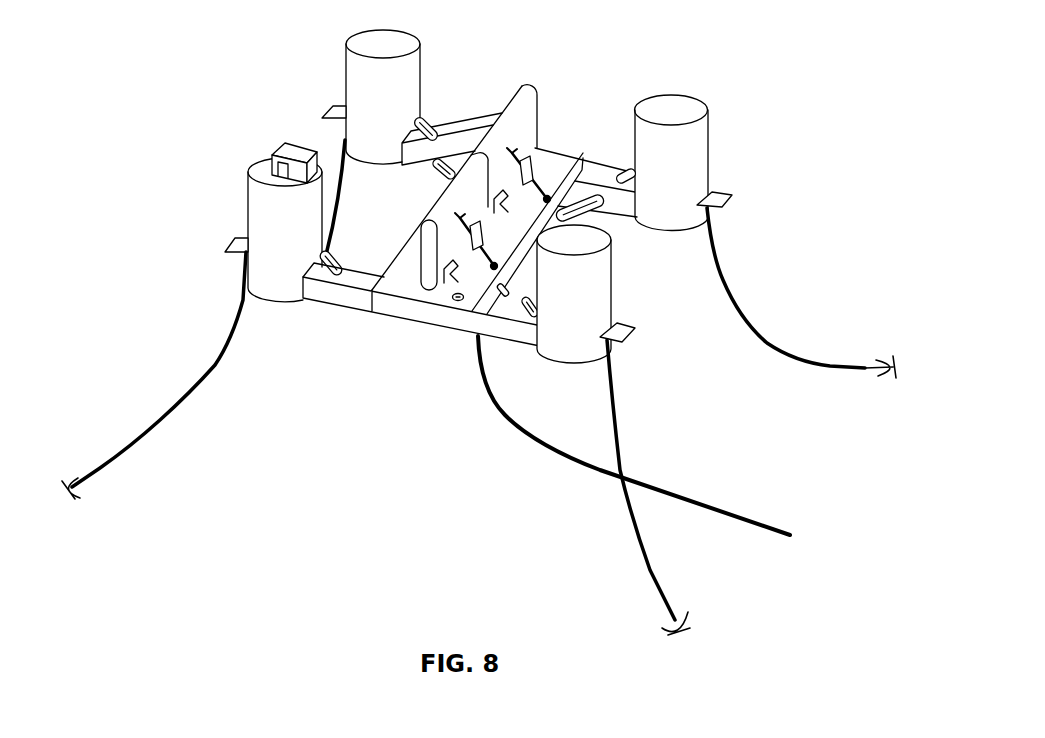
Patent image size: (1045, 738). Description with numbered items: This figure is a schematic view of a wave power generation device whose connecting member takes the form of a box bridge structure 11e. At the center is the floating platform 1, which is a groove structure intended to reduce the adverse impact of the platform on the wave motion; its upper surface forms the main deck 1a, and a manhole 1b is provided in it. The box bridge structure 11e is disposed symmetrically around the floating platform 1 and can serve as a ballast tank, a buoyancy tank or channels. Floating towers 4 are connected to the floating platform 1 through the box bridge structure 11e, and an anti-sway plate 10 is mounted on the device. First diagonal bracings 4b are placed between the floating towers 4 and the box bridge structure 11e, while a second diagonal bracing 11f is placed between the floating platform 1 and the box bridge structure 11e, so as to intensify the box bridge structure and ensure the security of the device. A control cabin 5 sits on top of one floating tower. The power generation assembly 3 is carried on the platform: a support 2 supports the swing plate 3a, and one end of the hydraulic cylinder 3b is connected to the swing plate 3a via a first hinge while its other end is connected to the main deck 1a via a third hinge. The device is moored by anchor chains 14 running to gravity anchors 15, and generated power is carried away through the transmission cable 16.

The floating platform 1 is at (404, 337).
The main deck 1a is at (420, 293).
The manhole 1b is at (457, 302).
The support for supporting swing plate 2 is at (450, 267).
The power generation assembly 3 is at (541, 73).
The swing plate 3a is at (523, 122).
The hydraulic cylinder 3b is at (585, 147).
The floating tower 4 is at (434, 33).
The first diagonal bracing 4b is at (432, 130).
The control cabin 5 is at (265, 135).
The anti-sway plate 10 is at (727, 196).
The box bridge structure 11e is at (508, 332).
The second diagonal bracing 11f is at (443, 172).
The anchor chain 14 is at (743, 300).
The gravity anchor 15 is at (683, 617).
The transmission cable 16 is at (678, 490).